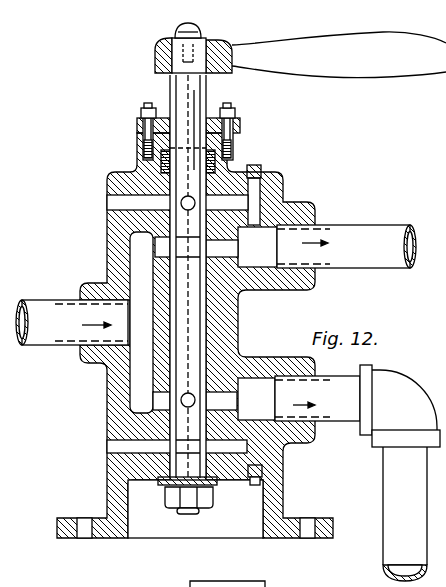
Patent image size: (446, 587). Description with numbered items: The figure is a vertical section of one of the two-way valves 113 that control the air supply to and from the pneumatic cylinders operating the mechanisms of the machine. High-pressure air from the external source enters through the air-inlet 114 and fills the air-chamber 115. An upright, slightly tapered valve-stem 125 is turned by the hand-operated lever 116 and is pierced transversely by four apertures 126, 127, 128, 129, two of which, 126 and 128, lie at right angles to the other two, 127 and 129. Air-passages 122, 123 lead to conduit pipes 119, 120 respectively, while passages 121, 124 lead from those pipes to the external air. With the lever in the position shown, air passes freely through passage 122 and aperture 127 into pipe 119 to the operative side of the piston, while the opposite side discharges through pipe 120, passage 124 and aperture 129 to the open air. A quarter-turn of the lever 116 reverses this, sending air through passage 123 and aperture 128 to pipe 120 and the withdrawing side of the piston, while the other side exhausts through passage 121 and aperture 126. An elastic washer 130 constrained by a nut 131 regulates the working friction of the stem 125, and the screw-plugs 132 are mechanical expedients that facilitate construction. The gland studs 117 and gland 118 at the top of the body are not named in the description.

The valve 113 is at (195, 335).
The air-inlet 114 is at (72, 322).
The air-chamber 115 is at (142, 322).
The hand-operated lever 116 is at (300, 50).
The gland stud 117 is at (234, 131).
The gland 118 is at (238, 152).
The pipe 119 is at (346, 246).
The pipe 120 is at (357, 473).
The passage 121 is at (177, 202).
The air-passage 122 is at (196, 247).
The air-passage 123 is at (195, 401).
The passage 124 is at (177, 445).
The valve-stem 125 is at (188, 276).
The aperture 126 is at (188, 195).
The aperture 127 is at (187, 247).
The aperture 128 is at (186, 393).
The aperture 129 is at (199, 444).
The elastic washer 130 is at (212, 485).
The nut 131 is at (208, 508).
The screw-plug 132 is at (261, 170).